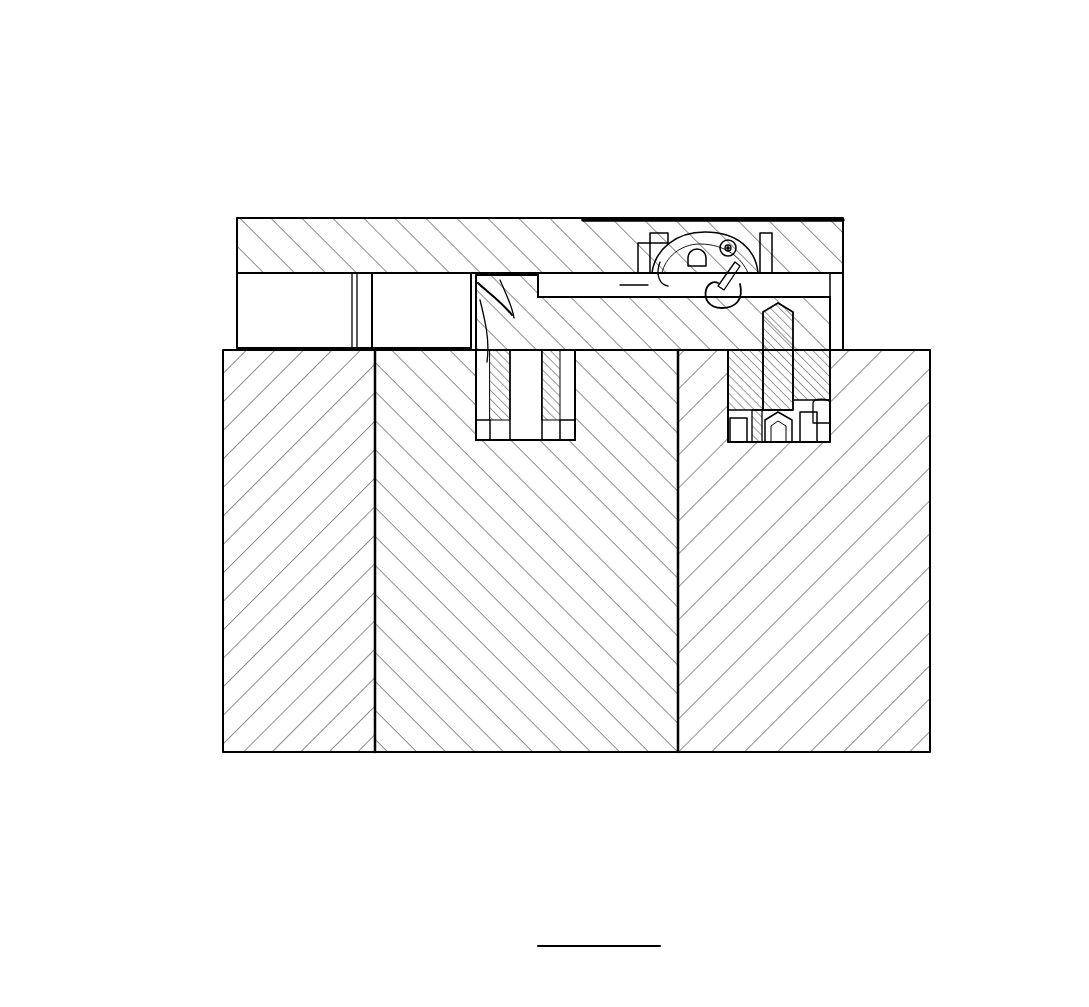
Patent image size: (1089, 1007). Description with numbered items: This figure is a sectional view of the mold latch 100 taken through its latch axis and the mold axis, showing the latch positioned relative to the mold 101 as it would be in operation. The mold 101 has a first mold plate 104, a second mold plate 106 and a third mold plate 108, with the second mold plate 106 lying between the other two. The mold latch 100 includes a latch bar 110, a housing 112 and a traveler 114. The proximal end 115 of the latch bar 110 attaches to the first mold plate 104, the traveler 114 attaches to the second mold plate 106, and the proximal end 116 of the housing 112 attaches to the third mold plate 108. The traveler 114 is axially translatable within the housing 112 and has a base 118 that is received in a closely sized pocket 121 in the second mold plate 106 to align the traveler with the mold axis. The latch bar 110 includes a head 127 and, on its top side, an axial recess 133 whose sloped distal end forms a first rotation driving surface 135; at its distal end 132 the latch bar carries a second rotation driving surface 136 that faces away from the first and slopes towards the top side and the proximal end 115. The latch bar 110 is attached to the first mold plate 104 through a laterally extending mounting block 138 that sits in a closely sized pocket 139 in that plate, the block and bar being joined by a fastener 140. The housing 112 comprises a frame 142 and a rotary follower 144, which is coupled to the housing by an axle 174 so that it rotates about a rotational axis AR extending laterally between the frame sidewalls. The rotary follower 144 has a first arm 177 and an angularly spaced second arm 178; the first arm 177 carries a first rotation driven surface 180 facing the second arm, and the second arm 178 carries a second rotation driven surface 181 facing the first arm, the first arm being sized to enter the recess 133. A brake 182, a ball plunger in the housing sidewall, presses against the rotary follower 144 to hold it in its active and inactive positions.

The mold latch 100 is at (166, 194).
The mold 101 is at (949, 156).
The first mold plate 104 is at (920, 638).
The second mold plate 106 is at (455, 752).
The third mold plate 108 is at (252, 648).
The latch bar 110 is at (615, 354).
The housing 112 is at (305, 203).
The traveler 114 is at (556, 452).
The proximal end 115 is at (812, 330).
The proximal end 116 is at (235, 313).
The base 118 is at (485, 404).
The pocket 121 is at (576, 434).
The head 127 is at (507, 297).
The distal end 132 is at (473, 337).
The axial recess 133 is at (560, 295).
The first rotation driving surface 135 is at (533, 290).
The second rotation driving surface 136 is at (468, 273).
The mounting block 138 is at (822, 392).
The pocket 139 is at (822, 430).
The fastener 140 is at (782, 378).
The frame 142 is at (232, 231).
The rotary follower 144 is at (711, 214).
The axle 174 is at (737, 244).
The first arm 177 is at (746, 262).
The second arm 178 is at (688, 236).
The first rotation driven surface 180 is at (742, 291).
The second rotation driven surface 181 is at (647, 283).
The brake 182 is at (680, 283).
The rotational axis AR is at (730, 244).